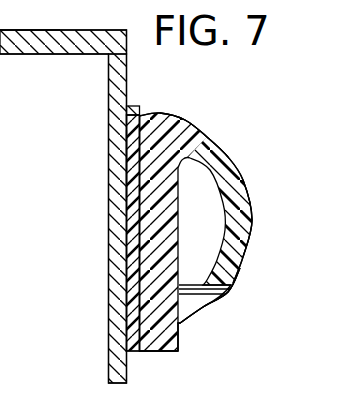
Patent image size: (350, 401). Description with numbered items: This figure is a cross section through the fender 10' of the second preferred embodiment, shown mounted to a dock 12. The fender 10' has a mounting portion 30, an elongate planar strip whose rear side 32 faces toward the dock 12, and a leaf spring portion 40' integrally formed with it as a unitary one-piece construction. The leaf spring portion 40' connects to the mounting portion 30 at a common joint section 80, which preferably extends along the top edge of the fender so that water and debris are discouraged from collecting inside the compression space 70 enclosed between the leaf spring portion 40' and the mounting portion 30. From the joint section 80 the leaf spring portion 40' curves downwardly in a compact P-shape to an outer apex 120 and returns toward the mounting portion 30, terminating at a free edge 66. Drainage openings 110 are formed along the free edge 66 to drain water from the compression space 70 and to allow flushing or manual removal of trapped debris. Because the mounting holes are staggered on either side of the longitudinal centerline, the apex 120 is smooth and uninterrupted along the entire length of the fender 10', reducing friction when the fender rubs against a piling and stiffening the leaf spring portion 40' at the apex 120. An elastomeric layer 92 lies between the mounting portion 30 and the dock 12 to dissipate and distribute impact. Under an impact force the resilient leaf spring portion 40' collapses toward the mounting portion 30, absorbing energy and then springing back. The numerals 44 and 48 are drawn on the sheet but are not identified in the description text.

The fender 10' is at (224, 118).
The dock 12 is at (74, 30).
The mounting portion 30 is at (167, 338).
The rear side 32 is at (128, 235).
The leaf spring portion 40' is at (231, 272).
The top wall surface 44 is at (50, 30).
The inner wall surface 48 is at (128, 160).
The free edge 66 is at (180, 322).
The compression space 70 is at (202, 193).
The joint section 80 is at (172, 120).
The elastomeric layer 92 is at (134, 107).
The drainage openings 110 is at (209, 299).
The apex 120 is at (252, 214).